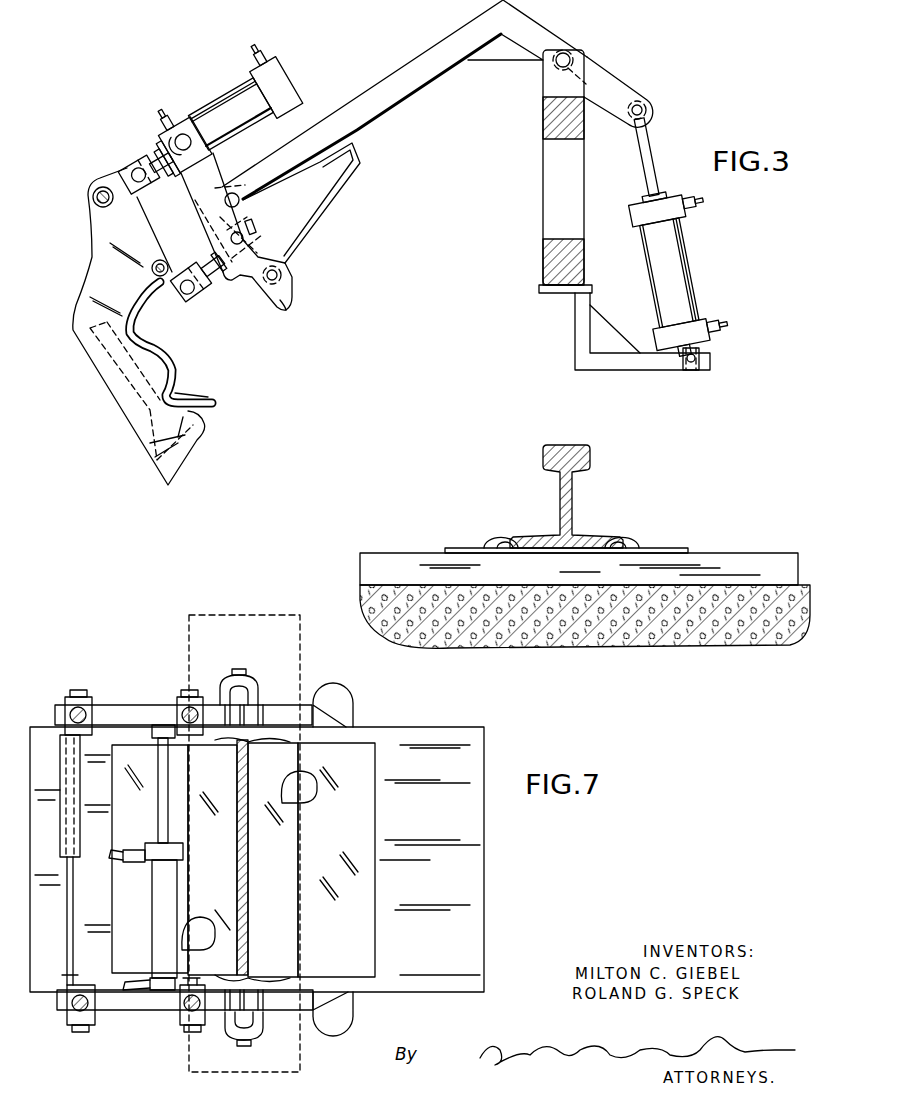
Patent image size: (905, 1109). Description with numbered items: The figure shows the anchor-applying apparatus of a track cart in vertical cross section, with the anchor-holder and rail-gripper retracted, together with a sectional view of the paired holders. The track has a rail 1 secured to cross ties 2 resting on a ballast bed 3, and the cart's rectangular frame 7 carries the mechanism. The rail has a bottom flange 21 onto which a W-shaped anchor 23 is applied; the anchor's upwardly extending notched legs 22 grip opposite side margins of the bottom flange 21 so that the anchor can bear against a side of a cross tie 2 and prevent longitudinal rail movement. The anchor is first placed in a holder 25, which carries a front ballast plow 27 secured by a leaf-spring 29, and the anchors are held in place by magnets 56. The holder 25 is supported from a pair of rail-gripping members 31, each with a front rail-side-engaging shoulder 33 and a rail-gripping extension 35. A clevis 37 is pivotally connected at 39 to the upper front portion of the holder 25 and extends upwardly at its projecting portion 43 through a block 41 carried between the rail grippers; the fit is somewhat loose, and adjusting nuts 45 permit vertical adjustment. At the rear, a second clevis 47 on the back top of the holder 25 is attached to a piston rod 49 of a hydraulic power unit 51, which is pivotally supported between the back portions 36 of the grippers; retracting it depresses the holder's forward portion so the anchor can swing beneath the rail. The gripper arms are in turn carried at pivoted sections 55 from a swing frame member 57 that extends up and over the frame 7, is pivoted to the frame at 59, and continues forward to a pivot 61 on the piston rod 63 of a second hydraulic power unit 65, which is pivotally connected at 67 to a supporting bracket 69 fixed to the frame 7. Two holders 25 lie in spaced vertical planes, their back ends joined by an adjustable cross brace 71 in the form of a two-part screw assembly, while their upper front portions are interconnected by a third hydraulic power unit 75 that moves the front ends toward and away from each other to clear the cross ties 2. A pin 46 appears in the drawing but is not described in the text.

In FIG. 3, the rail 1 is at (572, 497).
In FIG. 7, the rail 1 is at (255, 850).
In FIG. 3, the cross tie 2 is at (395, 555).
In FIG. 7, the cross tie 2 is at (475, 845).
In FIG. 3, the ballast bed 3 is at (615, 640).
In FIG. 3, the rectangular frame 7 is at (543, 203).
In FIG. 3, the bottom flange 21 is at (540, 540).
In FIG. 7, the bottom flange 21 is at (292, 868).
In FIG. 3, the notched legs 22 is at (150, 293).
In FIG. 3, the W-shaped anchor 23 is at (183, 365).
In FIG. 7, the W-shaped anchor 23 is at (273, 716).
In FIG. 3, the holder 25 is at (77, 290).
In FIG. 7, the holder 25 is at (120, 703).
In FIG. 3, the front ballast plow 27 is at (183, 462).
In FIG. 7, the front ballast plow 27 is at (338, 712).
In FIG. 3, the leaf-spring 29 is at (100, 388).
In FIG. 7, the leaf-spring 29 is at (270, 705).
In FIG. 3, the rail-gripping member 31 is at (295, 287).
In FIG. 3, the front rail-side-engaging shoulder 33 is at (245, 282).
In FIG. 3, the rail-gripping extension 35 is at (280, 304).
In FIG. 3, the back portions 36 is at (218, 182).
In FIG. 3, the clevis 37 is at (200, 293).
In FIG. 7, the clevis 37 is at (185, 698).
In FIG. 3, the pivot connection 39 is at (172, 282).
In FIG. 3, the block 41 is at (258, 246).
In FIG. 3, the upwardly projecting portion 43 is at (254, 224).
In FIG. 7, the upwardly projecting portion 43 is at (185, 712).
In FIG. 3, the adjusting nuts 45 is at (210, 255).
In FIG. 3, the pivot pin 46 is at (246, 238).
In FIG. 3, the second clevis 47 is at (138, 172).
In FIG. 7, the second clevis 47 is at (90, 700).
In FIG. 3, the piston rod 49 is at (160, 162).
In FIG. 7, the piston rod 49 is at (75, 712).
In FIG. 3, the hydraulic power unit 51 is at (222, 108).
In FIG. 3, the pivoted sections 55 is at (242, 195).
In FIG. 3, the magnets 56 is at (190, 395).
In FIG. 7, the magnets 56 is at (235, 676).
In FIG. 3, the swing frame member 57 is at (410, 70).
In FIG. 3, the pivot 59 is at (567, 58).
In FIG. 3, the pivot 61 is at (642, 104).
In FIG. 3, the piston rod 63 is at (651, 162).
In FIG. 3, the second hydraulic power unit 65 is at (684, 262).
In FIG. 3, the pivot connection 67 is at (692, 370).
In FIG. 3, the supporting bracket 69 is at (608, 330).
In FIG. 3, the adjustable cross brace 71 is at (96, 195).
In FIG. 7, the adjustable cross brace 71 is at (80, 838).
In FIG. 7, the third hydraulic power unit 75 is at (155, 898).